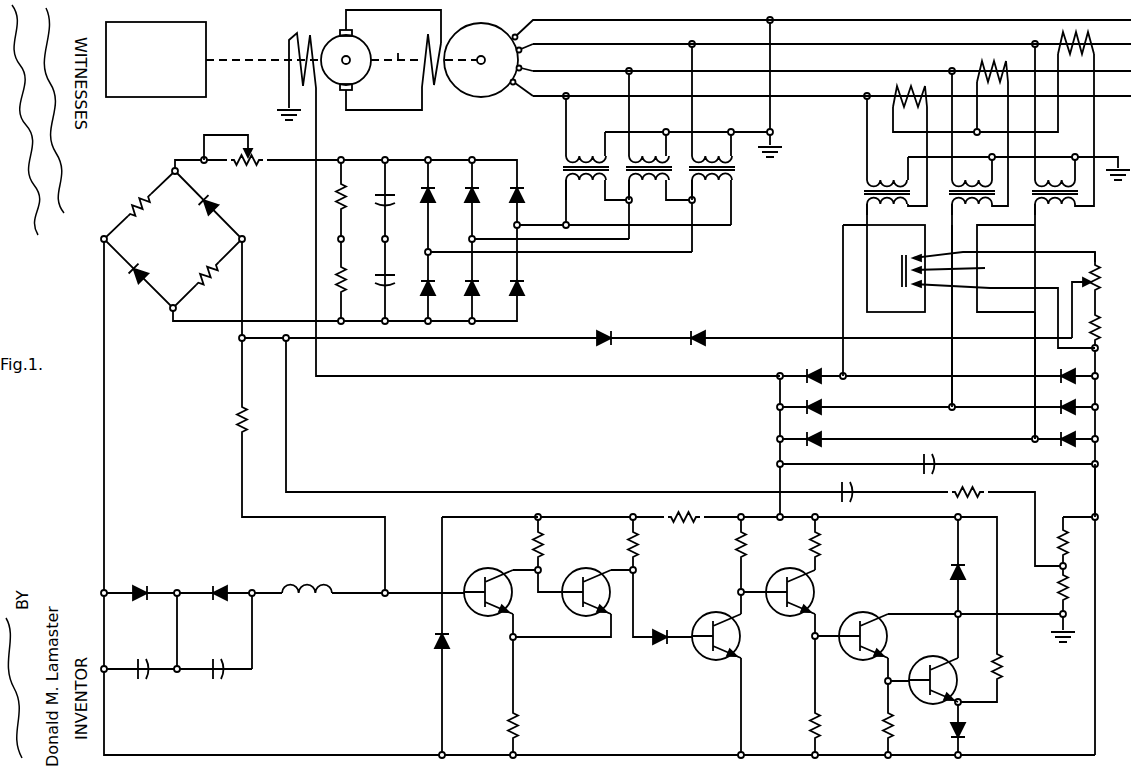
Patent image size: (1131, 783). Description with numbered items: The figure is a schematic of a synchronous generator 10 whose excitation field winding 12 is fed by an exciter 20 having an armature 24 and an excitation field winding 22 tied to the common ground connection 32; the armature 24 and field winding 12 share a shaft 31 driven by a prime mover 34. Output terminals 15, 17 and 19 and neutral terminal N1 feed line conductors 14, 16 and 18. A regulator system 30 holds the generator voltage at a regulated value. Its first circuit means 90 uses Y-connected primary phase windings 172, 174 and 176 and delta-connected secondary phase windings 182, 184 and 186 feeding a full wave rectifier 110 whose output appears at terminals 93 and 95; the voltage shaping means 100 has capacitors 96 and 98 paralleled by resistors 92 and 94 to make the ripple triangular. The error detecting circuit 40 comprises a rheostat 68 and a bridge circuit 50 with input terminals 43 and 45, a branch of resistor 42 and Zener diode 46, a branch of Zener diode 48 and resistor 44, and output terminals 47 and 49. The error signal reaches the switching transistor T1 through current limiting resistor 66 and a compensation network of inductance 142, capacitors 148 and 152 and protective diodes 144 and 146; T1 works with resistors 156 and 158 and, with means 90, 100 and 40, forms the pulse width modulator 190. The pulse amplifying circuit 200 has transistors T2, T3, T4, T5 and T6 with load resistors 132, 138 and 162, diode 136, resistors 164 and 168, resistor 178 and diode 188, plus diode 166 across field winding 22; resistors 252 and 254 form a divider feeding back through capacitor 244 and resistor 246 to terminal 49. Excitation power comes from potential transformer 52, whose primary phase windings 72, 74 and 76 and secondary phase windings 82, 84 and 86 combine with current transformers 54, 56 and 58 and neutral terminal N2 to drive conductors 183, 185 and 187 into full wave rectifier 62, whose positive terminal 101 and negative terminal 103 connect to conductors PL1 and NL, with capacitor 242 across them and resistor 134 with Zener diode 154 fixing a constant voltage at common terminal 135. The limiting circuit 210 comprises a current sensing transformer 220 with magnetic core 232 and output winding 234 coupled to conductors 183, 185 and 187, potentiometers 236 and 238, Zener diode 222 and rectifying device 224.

The synchronous generator 10 is at (490, 16).
The excitation field winding 12 is at (424, 76).
The line conductor 14 is at (577, 44).
The output terminal 15 is at (522, 47).
The line conductor 16 is at (577, 71).
The output terminal 17 is at (522, 67).
The line conductor 18 is at (577, 96).
The output terminal 19 is at (520, 83).
The exciter 20 is at (330, 20).
The excitation field winding 22 is at (292, 44).
The armature 24 is at (353, 89).
The regulator system 30 is at (92, 429).
The shaft 31 is at (399, 48).
The common ground connection 32 is at (284, 107).
The prime mover 34 is at (178, 97).
The error detecting circuit 40 is at (198, 347).
The resistor 42 is at (128, 205).
The input terminal 43 is at (172, 170).
The resistor 44 is at (211, 284).
The input terminal 45 is at (170, 312).
The semiconductor diode 46 is at (132, 284).
The output terminal 47 is at (102, 240).
The semiconductor diode 48 is at (214, 197).
The output terminal 49 is at (246, 240).
The bridge circuit 50 is at (188, 247).
The three-phase potential transformer 52 is at (857, 200).
The current transformer 54 is at (1069, 40).
The current transformer 56 is at (985, 66).
The current transformer 58 is at (900, 93).
The three-phase full wave rectifier 62 is at (928, 433).
The current limiting resistor 66 is at (236, 418).
The rheostat 68 is at (263, 156).
The primary phase winding 72 is at (887, 184).
The primary phase winding 74 is at (972, 184).
The primary phase winding 76 is at (1056, 184).
The secondary phase winding 82 is at (884, 214).
The secondary phase winding 84 is at (971, 214).
The secondary phase winding 86 is at (1054, 214).
The rectifying means 90 is at (553, 313).
The resistor 92 is at (343, 190).
The output terminal 93 is at (472, 158).
The resistor 94 is at (343, 296).
The output terminal 95 is at (473, 326).
The first capacitor 96 is at (388, 193).
The second capacitor 98 is at (388, 290).
The voltage shaping means 100 is at (380, 233).
The positive output terminal 101 is at (777, 407).
The negative output terminal 103 is at (1097, 406).
The three-phase full wave rectifier 110 is at (462, 233).
The load resistor 132 is at (630, 542).
The voltage dropping resistor 134 is at (686, 520).
The common terminal 135 is at (540, 516).
The diode 136 is at (667, 648).
The load resistor 138 is at (746, 538).
The inductance 142 is at (310, 596).
The semiconductor diode 144 is at (141, 586).
The semiconductor diode 146 is at (220, 586).
The capacitor 148 is at (143, 680).
The capacitor 152 is at (218, 680).
The semiconductor diode 154 is at (447, 650).
The resistor 156 is at (535, 540).
The resistor 158 is at (520, 730).
The load resistor 162 is at (820, 538).
The resistor 164 is at (820, 728).
The diode 166 is at (950, 570).
The resistor 168 is at (893, 728).
The primary phase winding 172 is at (585, 152).
The primary phase winding 174 is at (645, 158).
The primary phase winding 176 is at (710, 158).
The resistor 178 is at (1000, 685).
The secondary phase winding 182 is at (583, 190).
The output conductor 183 is at (843, 262).
The secondary phase winding 184 is at (647, 190).
The output conductor 185 is at (950, 357).
The secondary phase winding 186 is at (710, 190).
The output conductor 187 is at (1033, 357).
The diode 188 is at (965, 730).
The pulse width modulator 190 is at (361, 746).
The pulse amplifying circuit 200 is at (677, 746).
The limiting circuit 210 is at (665, 330).
The three-phase current sensing transformer 220 is at (1024, 248).
The semiconductor diode 222 is at (596, 346).
The rectifying device 224 is at (690, 346).
The magnetic core 232 is at (896, 268).
The three-phase output winding 234 is at (988, 268).
The potentiometer 236 is at (1094, 262).
The potentiometer 238 is at (1096, 316).
The capacitor 242 is at (935, 462).
The capacitor 244 is at (851, 490).
The resistor 246 is at (980, 490).
The resistor 252 is at (1070, 545).
The resistor 254 is at (1072, 592).
The neutral terminal N1 is at (819, 21).
The neutral terminal N2 is at (1058, 133).
The negative conductor NL is at (1096, 497).
The positive conductor PL1 is at (548, 380).
The switching transistor T1 is at (478, 572).
The switching transistor T2 is at (578, 572).
The switching transistor T3 is at (712, 616).
The switching transistor T4 is at (783, 572).
The switching transistor T5 is at (862, 614).
The switching transistor T6 is at (932, 658).